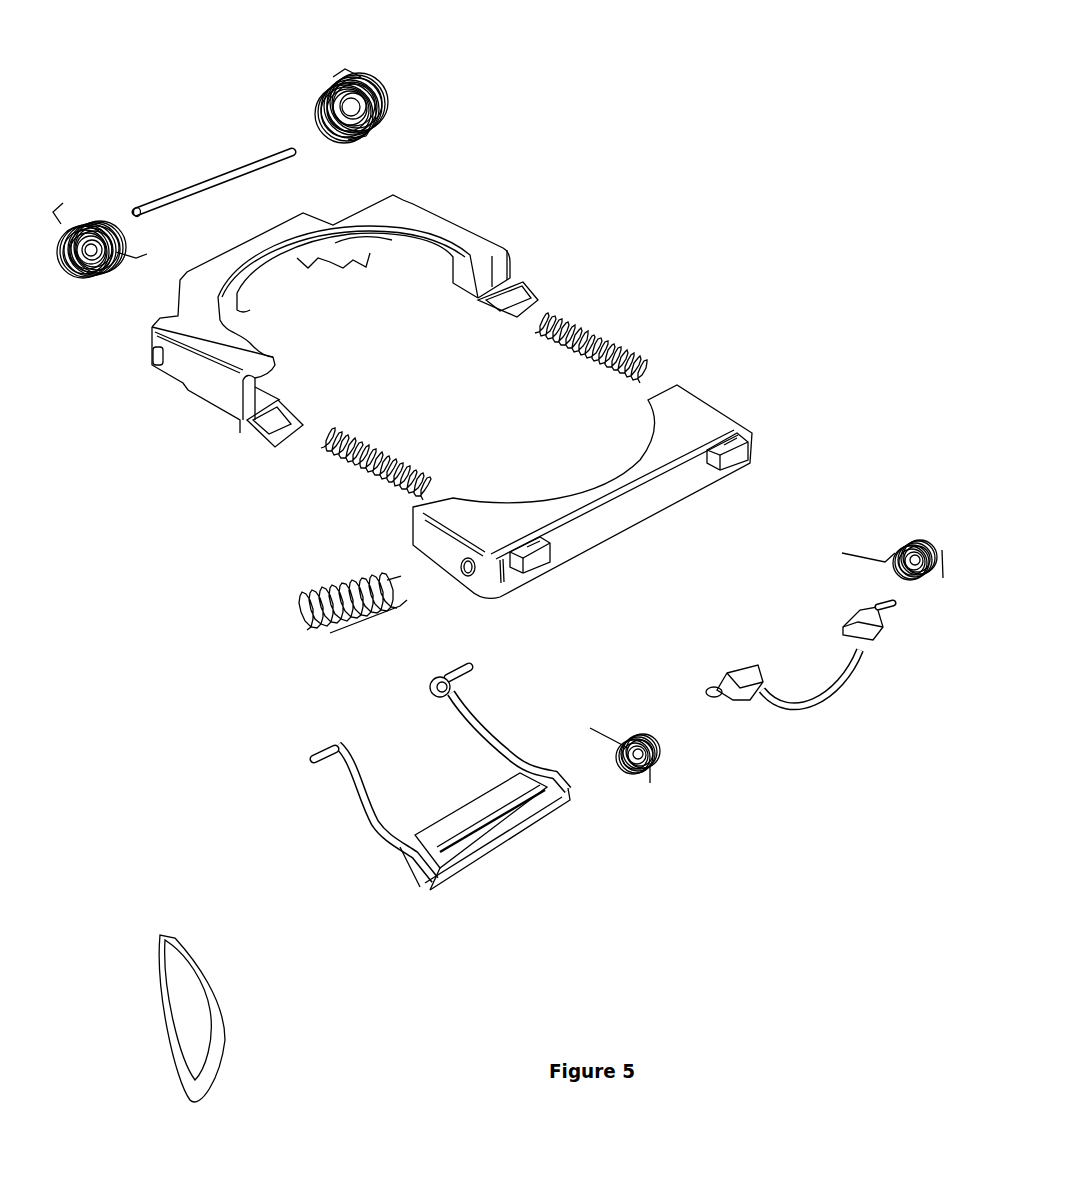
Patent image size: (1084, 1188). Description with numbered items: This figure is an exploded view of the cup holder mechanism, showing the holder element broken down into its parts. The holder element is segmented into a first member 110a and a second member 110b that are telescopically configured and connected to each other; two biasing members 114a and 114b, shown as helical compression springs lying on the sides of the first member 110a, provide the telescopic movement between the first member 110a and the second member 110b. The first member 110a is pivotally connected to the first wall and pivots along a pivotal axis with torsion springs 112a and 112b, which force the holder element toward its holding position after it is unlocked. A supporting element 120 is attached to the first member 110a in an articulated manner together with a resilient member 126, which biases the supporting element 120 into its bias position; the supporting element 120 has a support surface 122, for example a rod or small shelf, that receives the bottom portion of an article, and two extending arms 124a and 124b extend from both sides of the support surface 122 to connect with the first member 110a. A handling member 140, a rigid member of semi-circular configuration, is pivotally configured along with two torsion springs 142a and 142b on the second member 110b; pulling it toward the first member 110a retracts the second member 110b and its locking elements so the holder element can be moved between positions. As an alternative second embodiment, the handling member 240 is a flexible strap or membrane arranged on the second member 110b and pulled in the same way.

The first member 110a is at (452, 217).
The second member 110b is at (737, 423).
The torsion spring 112a is at (380, 72).
The torsion spring 112b is at (90, 217).
The biasing member 114a is at (600, 333).
The biasing member 114b is at (387, 457).
The supporting element 120 is at (420, 776).
The support surface 122 is at (497, 848).
The extending arm 124a is at (493, 730).
The extending arm 124b is at (348, 803).
The resilient member 126 is at (330, 597).
The handling member 140 is at (837, 710).
The torsion spring 142a is at (643, 733).
The torsion spring 142b is at (921, 533).
The handling member 240 is at (210, 1087).